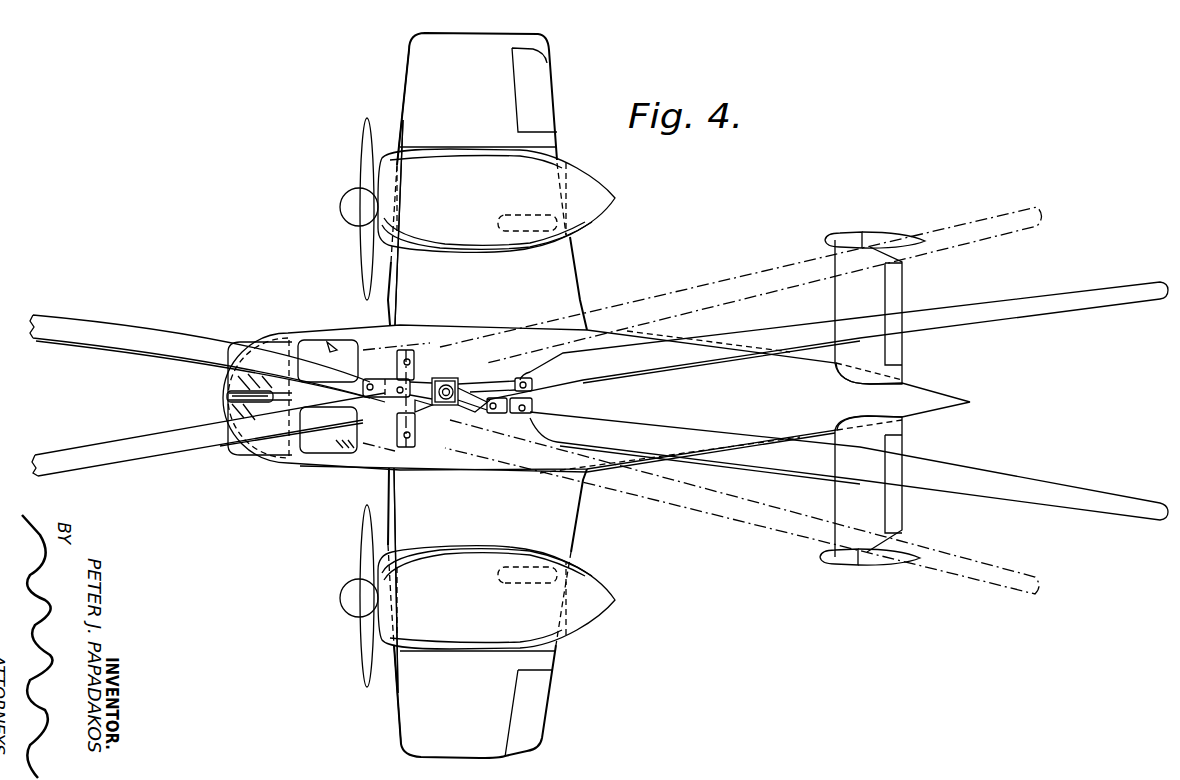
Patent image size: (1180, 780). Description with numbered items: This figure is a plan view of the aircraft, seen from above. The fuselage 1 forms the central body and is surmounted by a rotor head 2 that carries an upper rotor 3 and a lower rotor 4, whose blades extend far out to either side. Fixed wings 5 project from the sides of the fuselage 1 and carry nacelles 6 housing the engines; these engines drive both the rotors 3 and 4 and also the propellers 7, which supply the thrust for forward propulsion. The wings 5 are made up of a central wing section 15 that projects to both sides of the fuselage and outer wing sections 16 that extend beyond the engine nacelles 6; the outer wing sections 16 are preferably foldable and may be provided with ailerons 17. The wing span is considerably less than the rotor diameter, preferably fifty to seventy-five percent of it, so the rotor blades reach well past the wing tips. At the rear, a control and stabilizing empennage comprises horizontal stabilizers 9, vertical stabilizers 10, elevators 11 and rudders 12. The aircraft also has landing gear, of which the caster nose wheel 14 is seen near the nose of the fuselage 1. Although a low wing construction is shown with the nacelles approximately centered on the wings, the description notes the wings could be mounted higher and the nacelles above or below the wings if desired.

The fuselage 1 is at (320, 465).
The rotor head 2 is at (446, 380).
The upper rotor 3 is at (158, 358).
The lower rotor 4 is at (155, 433).
The fixed wings 5 is at (579, 528).
The nacelles 6 is at (469, 226).
The propellers 7 is at (360, 265).
The horizontal stabilizers 9 is at (847, 297).
The vertical stabilizers 10 is at (827, 237).
The elevators 11 is at (895, 285).
The rudders 12 is at (887, 230).
The caster nose wheel 14 is at (230, 381).
The central wing section 15 is at (403, 300).
The outer wing sections 16 is at (423, 77).
The ailerons 17 is at (535, 83).